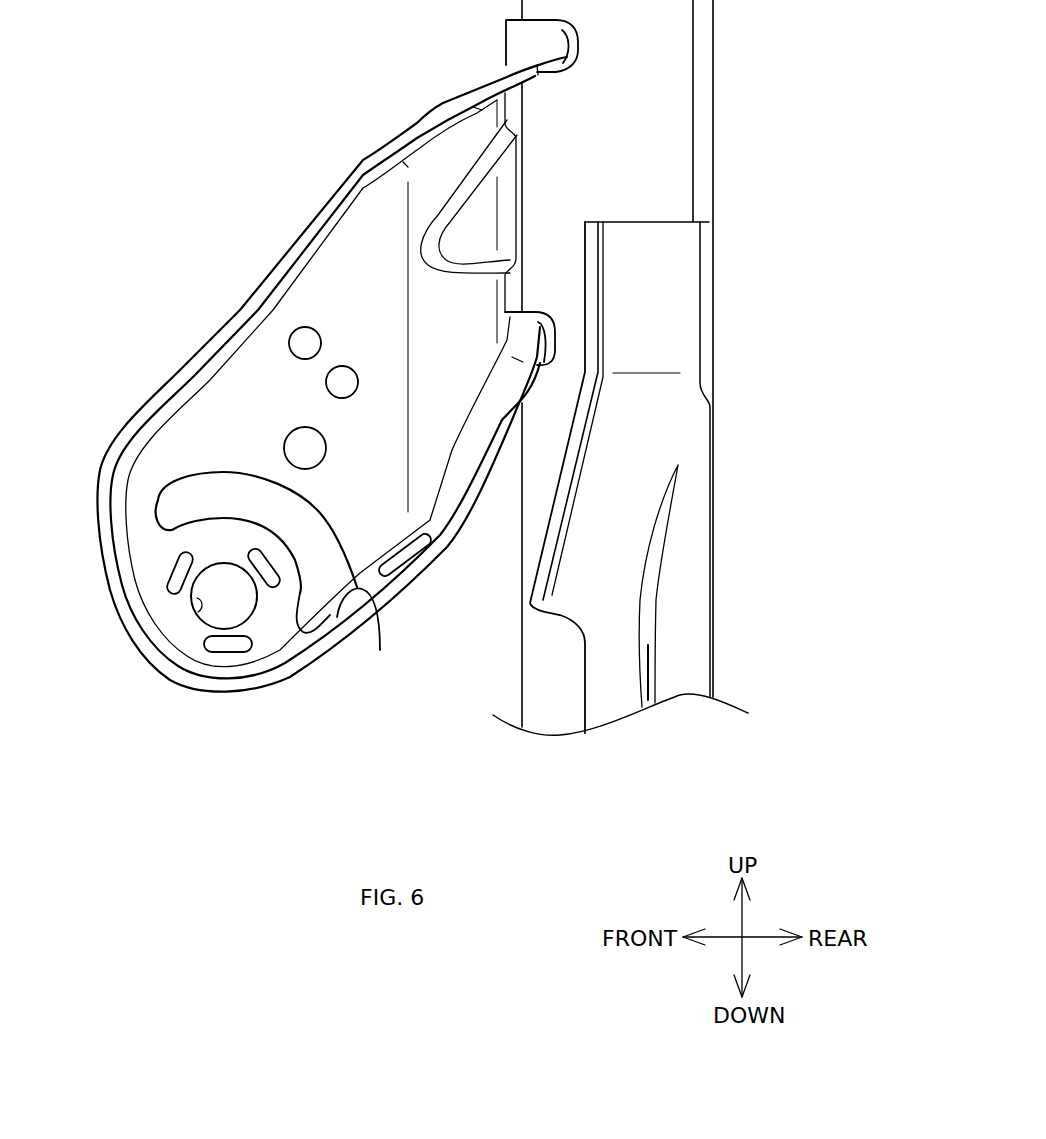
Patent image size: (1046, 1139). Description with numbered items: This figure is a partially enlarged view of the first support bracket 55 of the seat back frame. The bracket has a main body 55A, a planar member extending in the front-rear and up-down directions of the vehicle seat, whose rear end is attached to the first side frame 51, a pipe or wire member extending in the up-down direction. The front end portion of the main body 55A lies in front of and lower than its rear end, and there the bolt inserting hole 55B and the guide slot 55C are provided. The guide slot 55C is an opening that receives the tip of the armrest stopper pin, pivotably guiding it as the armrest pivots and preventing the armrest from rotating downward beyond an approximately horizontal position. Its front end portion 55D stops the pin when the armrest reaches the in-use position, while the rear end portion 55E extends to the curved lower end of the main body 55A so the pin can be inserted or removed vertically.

The first side frame 51 is at (655, 102).
The first support bracket 55 is at (261, 251).
The main body 55A is at (208, 412).
The bolt inserting hole 55B is at (203, 613).
The guide slot 55C is at (315, 627).
The front end portion 55D is at (167, 530).
The rear end portion 55E is at (357, 590).